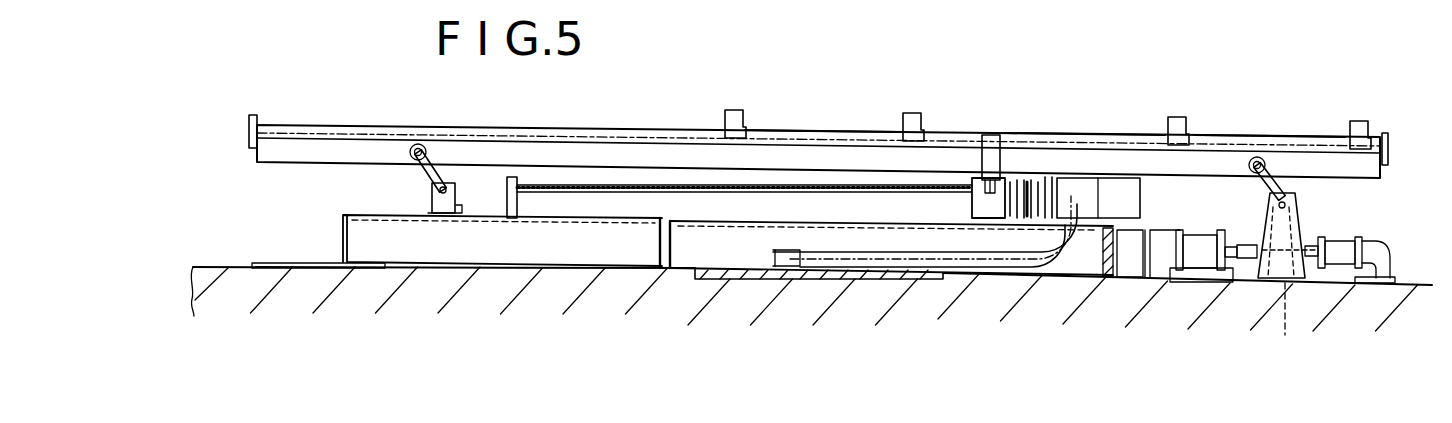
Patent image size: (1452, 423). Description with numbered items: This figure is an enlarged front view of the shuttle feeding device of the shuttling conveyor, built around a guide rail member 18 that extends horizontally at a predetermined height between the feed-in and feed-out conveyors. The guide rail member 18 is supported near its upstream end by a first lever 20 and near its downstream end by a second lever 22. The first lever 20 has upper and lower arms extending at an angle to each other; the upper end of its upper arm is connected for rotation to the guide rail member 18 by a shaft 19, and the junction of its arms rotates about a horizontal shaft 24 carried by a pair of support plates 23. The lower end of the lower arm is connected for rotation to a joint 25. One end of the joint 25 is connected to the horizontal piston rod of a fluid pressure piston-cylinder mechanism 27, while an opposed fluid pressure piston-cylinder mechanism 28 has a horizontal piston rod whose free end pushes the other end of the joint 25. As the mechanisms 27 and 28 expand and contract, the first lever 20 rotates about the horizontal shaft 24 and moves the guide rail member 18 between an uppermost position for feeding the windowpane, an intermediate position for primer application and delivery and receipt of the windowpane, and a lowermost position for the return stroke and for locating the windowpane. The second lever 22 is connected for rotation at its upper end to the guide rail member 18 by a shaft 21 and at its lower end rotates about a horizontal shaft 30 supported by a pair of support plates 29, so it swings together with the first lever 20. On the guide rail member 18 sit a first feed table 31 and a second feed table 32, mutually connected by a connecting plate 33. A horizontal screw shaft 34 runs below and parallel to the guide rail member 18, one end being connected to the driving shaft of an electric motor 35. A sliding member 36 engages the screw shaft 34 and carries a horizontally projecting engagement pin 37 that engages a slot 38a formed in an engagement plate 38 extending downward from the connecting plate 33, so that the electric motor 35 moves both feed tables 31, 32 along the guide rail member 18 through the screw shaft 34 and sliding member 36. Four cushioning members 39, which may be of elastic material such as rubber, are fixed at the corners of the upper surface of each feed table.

The guide rail member 18 is at (539, 128).
The shaft 19 is at (1258, 157).
The first lever 20 is at (1280, 184).
The shaft 21 is at (412, 140).
The second lever 22 is at (428, 181).
The support plates 23 is at (1303, 228).
The horizontal shaft 24 is at (1268, 208).
The joint 25 is at (1288, 323).
The fluid pressure piston-cylinder mechanism 27 is at (1340, 247).
The fluid pressure piston-cylinder mechanism 28 is at (1195, 243).
The support plates 29 is at (430, 205).
The horizontal shaft 30 is at (497, 180).
The first feed table 31 is at (1222, 134).
The second feed table 32 is at (825, 132).
The connecting plate 33 is at (1050, 136).
The screw shaft 34 is at (740, 194).
The electric motor 35 is at (1143, 195).
The sliding member 36 is at (972, 209).
The engagement pin 37 is at (918, 194).
The engagement plate 38 is at (982, 158).
The slot 38a is at (1000, 170).
The cushioning members 39 is at (742, 110).